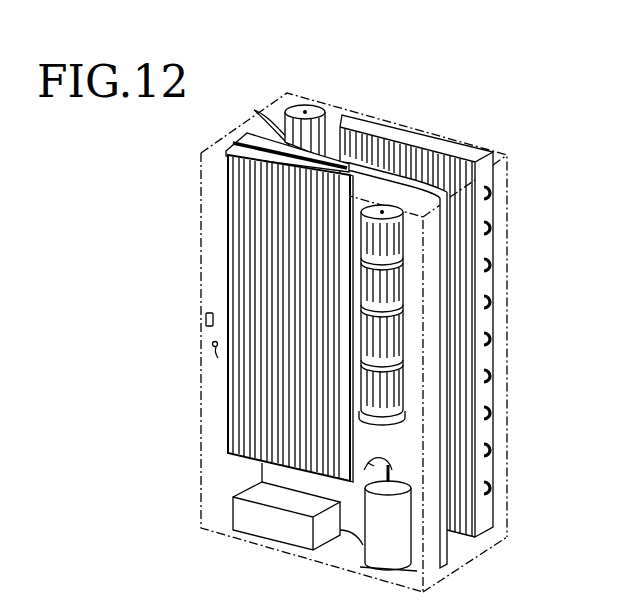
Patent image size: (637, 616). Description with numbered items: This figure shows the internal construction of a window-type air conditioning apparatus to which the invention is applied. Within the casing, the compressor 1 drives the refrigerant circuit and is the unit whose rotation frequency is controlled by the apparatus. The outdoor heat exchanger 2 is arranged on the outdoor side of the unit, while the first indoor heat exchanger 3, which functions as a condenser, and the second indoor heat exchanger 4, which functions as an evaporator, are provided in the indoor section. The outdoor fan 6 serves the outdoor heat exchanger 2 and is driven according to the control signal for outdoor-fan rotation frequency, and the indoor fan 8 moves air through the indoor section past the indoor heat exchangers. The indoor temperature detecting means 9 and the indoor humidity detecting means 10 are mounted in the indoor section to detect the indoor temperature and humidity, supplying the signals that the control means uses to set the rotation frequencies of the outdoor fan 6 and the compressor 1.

The compressor 1 is at (378, 553).
The outdoor heat exchanger 2 is at (440, 138).
The first indoor heat exchanger 3 is at (228, 203).
The second indoor heat exchanger 4 is at (242, 138).
The outdoor fan 6 is at (306, 110).
The indoor fan 8 is at (404, 395).
The indoor temperature detecting means 9 is at (206, 320).
The indoor humidity detecting means 10 is at (214, 348).